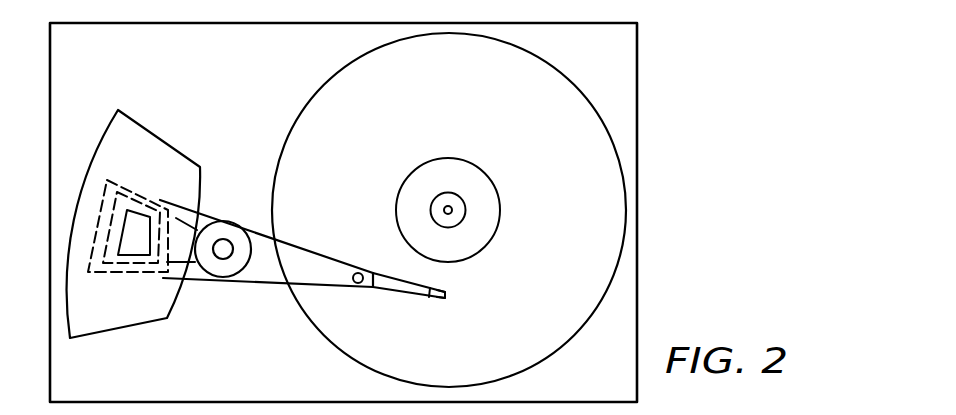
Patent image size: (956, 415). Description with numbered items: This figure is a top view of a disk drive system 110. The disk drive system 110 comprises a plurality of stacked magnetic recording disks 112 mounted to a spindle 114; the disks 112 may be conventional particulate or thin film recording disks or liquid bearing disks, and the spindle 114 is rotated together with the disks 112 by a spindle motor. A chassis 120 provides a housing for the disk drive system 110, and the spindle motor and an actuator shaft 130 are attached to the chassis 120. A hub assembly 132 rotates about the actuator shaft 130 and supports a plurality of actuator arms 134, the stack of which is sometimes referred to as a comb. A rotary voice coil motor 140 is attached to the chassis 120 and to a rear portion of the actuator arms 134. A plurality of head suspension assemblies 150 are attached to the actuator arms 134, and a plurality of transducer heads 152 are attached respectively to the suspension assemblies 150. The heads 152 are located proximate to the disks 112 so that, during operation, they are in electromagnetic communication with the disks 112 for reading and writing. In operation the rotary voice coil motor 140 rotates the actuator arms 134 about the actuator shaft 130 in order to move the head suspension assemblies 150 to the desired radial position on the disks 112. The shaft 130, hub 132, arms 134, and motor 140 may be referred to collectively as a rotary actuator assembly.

The disk drive system 110 is at (676, 89).
The magnetic recording disk 112 is at (455, 118).
The spindle 114 is at (456, 192).
The chassis 120 is at (272, 383).
The actuator shaft 130 is at (223, 258).
The hub assembly 132 is at (232, 230).
The actuator arm 134 is at (304, 255).
The rotary voice coil motor 140 is at (113, 132).
The head suspension assembly 150 is at (394, 289).
The transducer head 152 is at (447, 299).